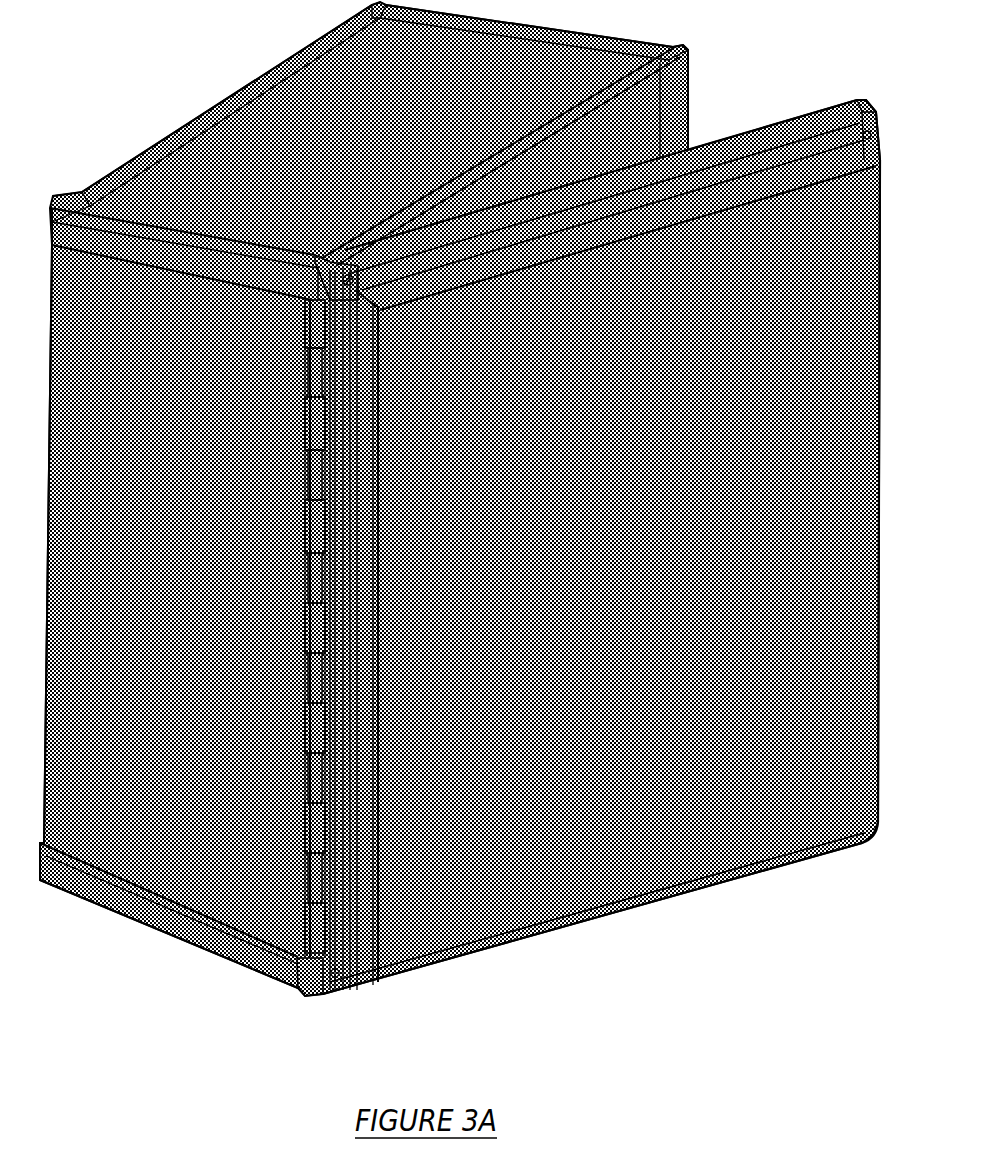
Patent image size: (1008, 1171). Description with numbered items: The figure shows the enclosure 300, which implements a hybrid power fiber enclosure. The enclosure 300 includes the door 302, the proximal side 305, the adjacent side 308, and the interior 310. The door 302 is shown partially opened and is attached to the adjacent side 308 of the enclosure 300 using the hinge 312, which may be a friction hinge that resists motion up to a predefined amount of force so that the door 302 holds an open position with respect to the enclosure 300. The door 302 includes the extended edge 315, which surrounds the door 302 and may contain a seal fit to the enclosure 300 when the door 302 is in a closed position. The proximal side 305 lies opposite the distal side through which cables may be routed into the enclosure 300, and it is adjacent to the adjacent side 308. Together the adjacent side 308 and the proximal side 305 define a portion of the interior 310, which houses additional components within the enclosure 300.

The enclosure 300 is at (225, 1013).
The door 302 is at (689, 543).
The proximal side 305 is at (352, 139).
The adjacent side 308 is at (210, 699).
The interior 310 is at (633, 149).
The hinge 312 is at (310, 400).
The extended edge 315 is at (790, 122).